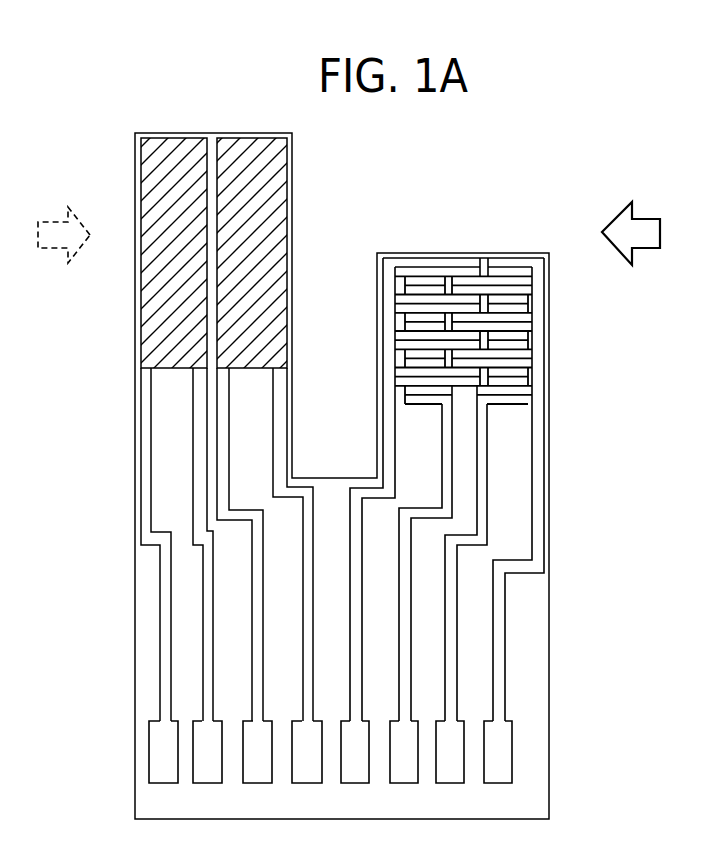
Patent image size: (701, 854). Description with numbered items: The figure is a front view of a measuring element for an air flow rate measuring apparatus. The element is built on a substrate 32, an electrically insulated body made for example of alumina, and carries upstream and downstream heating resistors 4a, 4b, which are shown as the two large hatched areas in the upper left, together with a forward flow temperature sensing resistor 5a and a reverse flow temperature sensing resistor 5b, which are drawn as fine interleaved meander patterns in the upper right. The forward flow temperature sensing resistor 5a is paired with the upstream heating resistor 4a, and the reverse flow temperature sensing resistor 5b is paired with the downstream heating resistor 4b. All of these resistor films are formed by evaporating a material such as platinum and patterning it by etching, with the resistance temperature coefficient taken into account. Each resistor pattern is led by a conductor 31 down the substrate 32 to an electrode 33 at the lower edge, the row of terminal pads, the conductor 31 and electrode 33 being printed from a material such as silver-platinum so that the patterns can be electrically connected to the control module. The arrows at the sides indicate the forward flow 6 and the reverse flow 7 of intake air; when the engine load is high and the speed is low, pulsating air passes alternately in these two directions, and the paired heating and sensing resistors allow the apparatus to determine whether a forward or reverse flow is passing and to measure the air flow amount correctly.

The upstream heating resistor 4a is at (283, 214).
The downstream heating resistor 4b is at (140, 308).
The forward flow temperature sensing resistor 5a is at (520, 257).
The reverse flow temperature sensing resistor 5b is at (440, 257).
The forward flow 6 is at (645, 238).
The reverse flow 7 is at (48, 278).
The conductor 31 is at (535, 521).
The substrate 32 is at (540, 681).
The electrode 33 is at (493, 771).